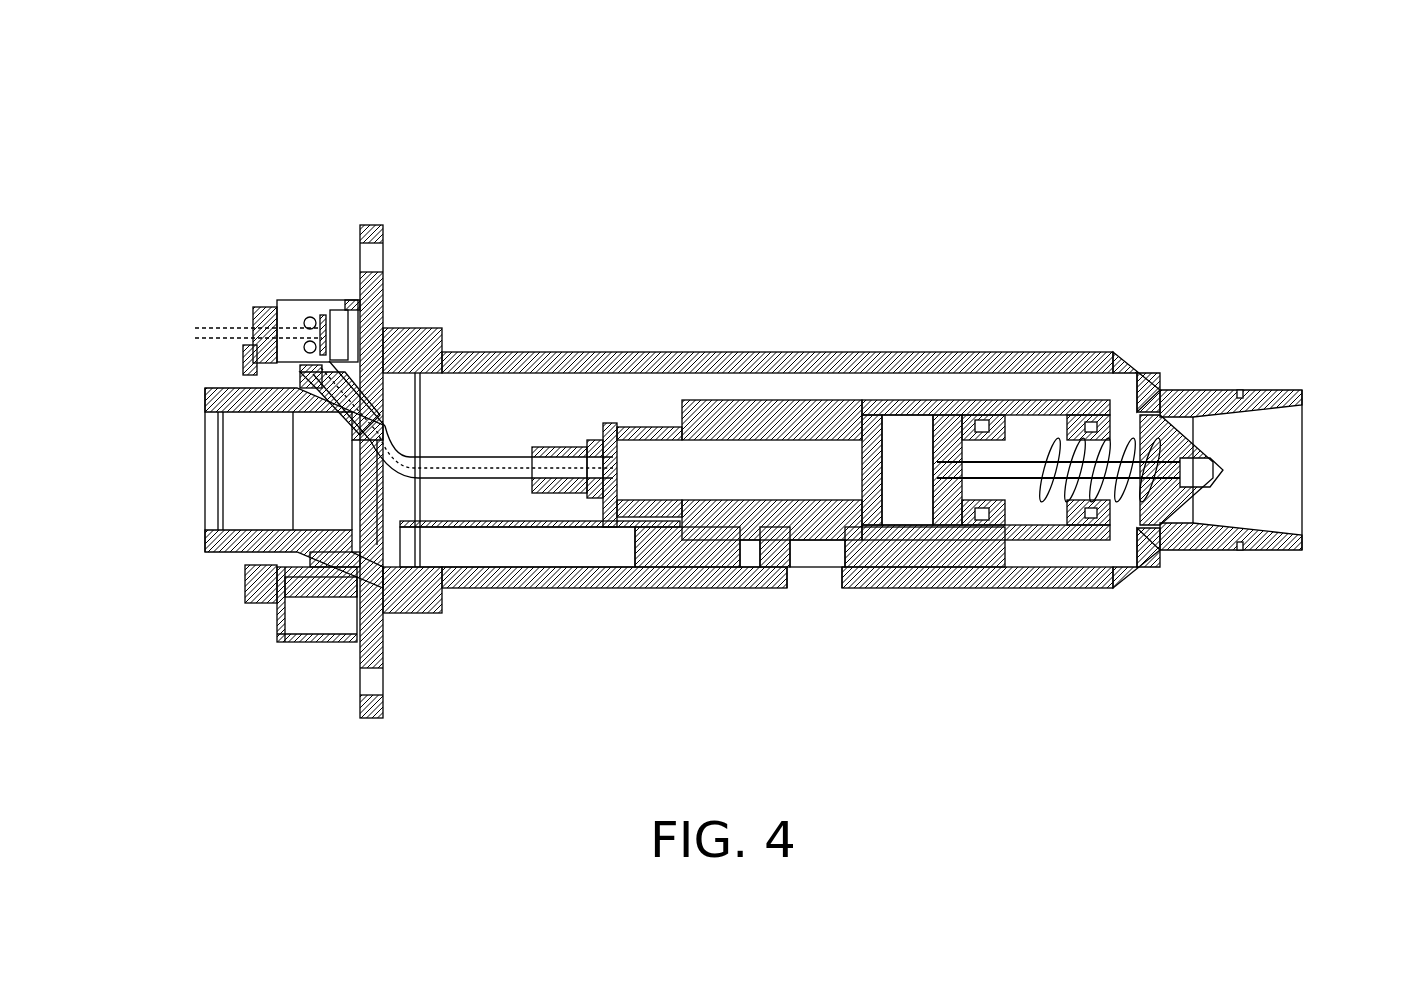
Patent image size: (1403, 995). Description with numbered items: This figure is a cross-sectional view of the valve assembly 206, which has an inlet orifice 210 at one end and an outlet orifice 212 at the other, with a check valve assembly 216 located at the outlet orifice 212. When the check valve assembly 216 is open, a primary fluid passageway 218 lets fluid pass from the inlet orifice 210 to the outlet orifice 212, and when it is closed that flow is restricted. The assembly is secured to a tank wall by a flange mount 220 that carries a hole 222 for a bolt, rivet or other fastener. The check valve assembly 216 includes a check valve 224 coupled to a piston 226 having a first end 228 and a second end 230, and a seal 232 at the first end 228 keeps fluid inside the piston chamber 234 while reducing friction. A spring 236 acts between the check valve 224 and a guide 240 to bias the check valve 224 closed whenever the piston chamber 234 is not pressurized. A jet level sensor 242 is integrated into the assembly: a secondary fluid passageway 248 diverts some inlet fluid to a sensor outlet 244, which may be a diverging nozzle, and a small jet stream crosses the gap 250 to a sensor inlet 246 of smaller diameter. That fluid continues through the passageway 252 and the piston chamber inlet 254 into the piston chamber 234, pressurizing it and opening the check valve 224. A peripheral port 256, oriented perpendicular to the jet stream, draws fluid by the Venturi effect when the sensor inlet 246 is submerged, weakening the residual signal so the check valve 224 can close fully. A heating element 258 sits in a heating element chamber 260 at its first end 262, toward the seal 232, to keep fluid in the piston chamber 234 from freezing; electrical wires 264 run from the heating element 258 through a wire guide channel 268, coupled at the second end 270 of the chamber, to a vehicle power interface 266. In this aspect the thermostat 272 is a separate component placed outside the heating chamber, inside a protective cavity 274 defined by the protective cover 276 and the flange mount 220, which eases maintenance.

The valve assembly 206 is at (635, 125).
The inlet orifice 210 is at (232, 478).
The outlet orifice 212 is at (1280, 458).
The check valve assembly 216 is at (1120, 545).
The primary fluid passageway 218 is at (853, 358).
The flange mount 220 is at (383, 658).
The hole 222 is at (362, 256).
The check valve 224 is at (1163, 425).
The piston 226 is at (1090, 440).
The first end 228 is at (913, 428).
The second end 230 is at (1115, 455).
The seal 232 is at (1048, 420).
The piston chamber 234 is at (978, 425).
The spring 236 is at (1170, 505).
The guide 240 is at (1060, 510).
The jet level sensor 242 is at (708, 656).
The sensor outlet 244 is at (758, 560).
The sensor inlet 246 is at (845, 548).
The secondary fluid passageway 248 is at (510, 545).
The gap 250 is at (798, 577).
The passageway 252 is at (895, 525).
The piston chamber inlet 254 is at (968, 540).
The peripheral port 256 is at (725, 590).
The heating element 258 is at (720, 440).
The heating element chamber 260 is at (608, 482).
The first end 262 is at (783, 440).
The electrical wires 264 is at (680, 530).
The vehicle power interface 266 is at (318, 375).
The wire guide channel 268 is at (543, 462).
The second end 270 is at (615, 525).
The thermostat 272 is at (325, 320).
The protective cavity 274 is at (298, 333).
The protective cover 276 is at (277, 627).